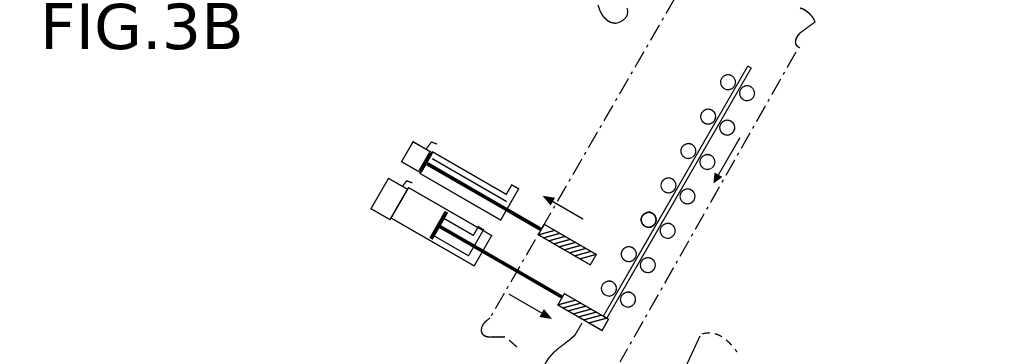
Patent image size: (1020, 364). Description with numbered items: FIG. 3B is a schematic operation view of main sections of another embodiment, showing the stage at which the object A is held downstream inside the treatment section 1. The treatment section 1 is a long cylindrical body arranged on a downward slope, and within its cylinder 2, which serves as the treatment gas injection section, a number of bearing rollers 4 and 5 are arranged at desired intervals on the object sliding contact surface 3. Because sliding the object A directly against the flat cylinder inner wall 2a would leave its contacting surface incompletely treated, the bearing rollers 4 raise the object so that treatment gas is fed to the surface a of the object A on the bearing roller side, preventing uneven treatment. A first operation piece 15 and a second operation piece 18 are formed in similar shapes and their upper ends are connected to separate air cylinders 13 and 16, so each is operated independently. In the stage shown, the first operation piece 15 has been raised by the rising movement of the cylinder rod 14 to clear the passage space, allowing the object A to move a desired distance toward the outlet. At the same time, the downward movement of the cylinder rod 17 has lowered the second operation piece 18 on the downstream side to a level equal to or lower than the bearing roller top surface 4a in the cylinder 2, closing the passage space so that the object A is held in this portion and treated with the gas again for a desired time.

The treatment section 1 is at (803, 75).
The cylinder 2 is at (770, 105).
The cylinder inner wall 2a is at (805, 51).
The object sliding contact surface 3 is at (745, 73).
The bearing roller 4 is at (747, 102).
The bearing roller top surface 4a is at (661, 180).
The bearing roller 5 is at (733, 74).
The air cylinder 13 is at (408, 145).
The cylinder rod 14 is at (525, 218).
The first operation piece 15 is at (590, 255).
The air cylinder 16 is at (385, 196).
The cylinder rod 17 is at (492, 264).
The second operation piece 18 is at (582, 25).
The object A is at (688, 210).
The surface of the object a is at (631, 315).